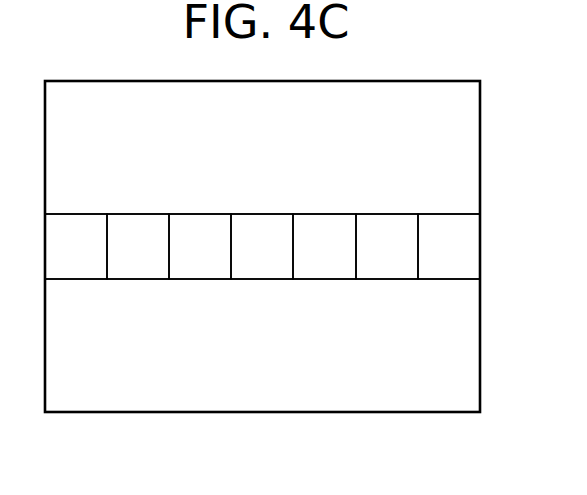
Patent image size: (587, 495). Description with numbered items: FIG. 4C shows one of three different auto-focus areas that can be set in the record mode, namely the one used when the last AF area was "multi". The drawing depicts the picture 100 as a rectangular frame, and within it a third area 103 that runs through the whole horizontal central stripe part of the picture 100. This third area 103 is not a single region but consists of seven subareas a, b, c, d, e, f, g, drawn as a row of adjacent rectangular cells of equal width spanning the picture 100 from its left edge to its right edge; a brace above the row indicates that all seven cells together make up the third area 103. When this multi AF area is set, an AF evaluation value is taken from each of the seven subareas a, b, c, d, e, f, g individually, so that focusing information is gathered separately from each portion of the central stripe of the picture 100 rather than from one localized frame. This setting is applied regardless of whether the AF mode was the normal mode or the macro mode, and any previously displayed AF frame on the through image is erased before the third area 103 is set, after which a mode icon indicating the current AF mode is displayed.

The picture 100 is at (481, 167).
The third area 103 is at (470, 145).
The subarea a is at (76, 213).
The subarea b is at (138, 213).
The subarea c is at (200, 213).
The subarea d is at (262, 213).
The subarea e is at (324, 213).
The subarea f is at (386, 213).
The subarea g is at (449, 213).